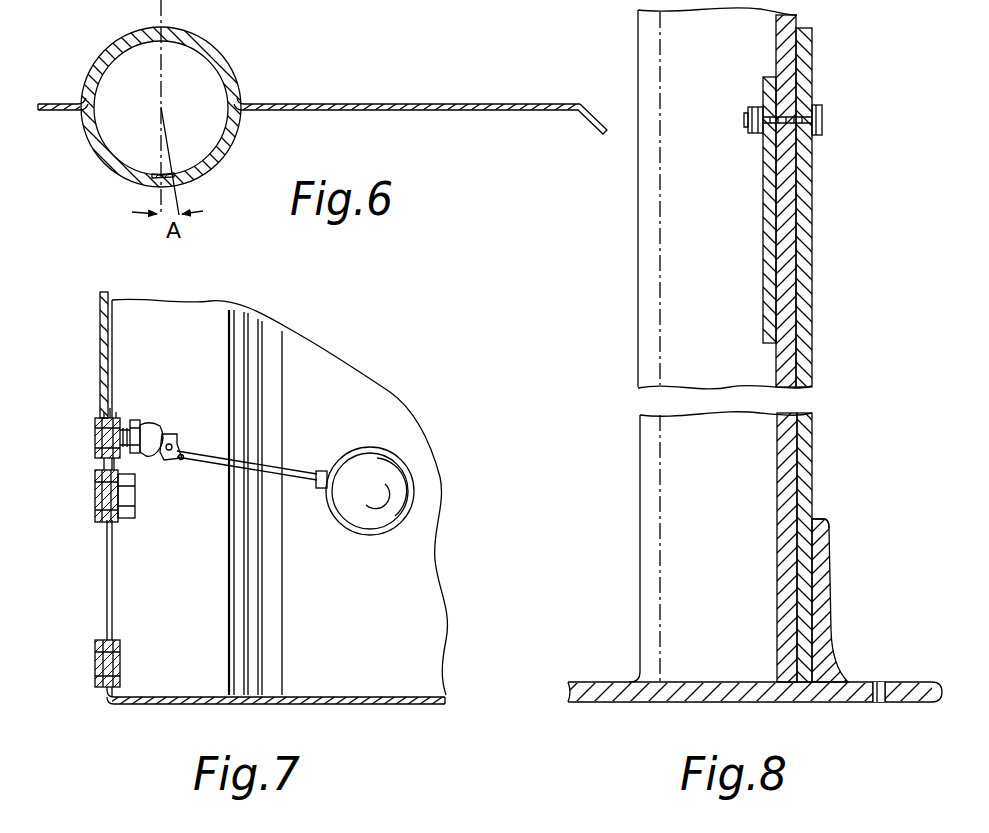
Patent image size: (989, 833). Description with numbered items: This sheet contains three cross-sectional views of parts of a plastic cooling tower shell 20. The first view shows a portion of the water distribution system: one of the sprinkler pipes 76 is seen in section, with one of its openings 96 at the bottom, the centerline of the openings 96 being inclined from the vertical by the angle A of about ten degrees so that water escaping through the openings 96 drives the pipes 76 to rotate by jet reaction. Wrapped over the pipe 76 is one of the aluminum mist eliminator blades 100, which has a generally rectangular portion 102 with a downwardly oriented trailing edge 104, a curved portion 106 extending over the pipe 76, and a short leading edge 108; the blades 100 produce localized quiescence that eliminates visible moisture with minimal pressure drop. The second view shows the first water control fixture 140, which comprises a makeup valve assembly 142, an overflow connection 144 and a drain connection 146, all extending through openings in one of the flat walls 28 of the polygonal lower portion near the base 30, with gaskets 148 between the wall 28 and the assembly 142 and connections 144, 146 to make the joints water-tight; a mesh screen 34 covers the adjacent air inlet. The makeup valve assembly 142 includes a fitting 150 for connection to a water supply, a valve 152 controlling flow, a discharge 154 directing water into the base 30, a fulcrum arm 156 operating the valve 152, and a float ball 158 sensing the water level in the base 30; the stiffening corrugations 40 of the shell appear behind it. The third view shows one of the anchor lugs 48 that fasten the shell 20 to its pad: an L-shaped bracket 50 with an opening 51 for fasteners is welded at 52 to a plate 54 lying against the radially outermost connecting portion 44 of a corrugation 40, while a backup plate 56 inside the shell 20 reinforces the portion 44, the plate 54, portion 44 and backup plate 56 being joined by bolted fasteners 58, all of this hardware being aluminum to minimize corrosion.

In FIG. 8, the shell 20 is at (620, 360).
In FIG. 7, the flat walls 28 is at (107, 570).
In FIG. 7, the base 30 is at (396, 705).
In FIG. 8, the base 30 is at (594, 690).
In FIG. 7, the mesh screen 34 is at (100, 328).
In FIG. 7, the corrugations 40 is at (292, 348).
In FIG. 8, the corrugations 40 is at (746, 460).
In FIG. 8, the radially outermost connecting portion 44 is at (780, 506).
In FIG. 8, the anchor lugs 48 is at (822, 357).
In FIG. 8, the L-shaped bracket 50 is at (826, 594).
In FIG. 8, the opening 51 is at (881, 682).
In FIG. 8, the weld 52 is at (814, 518).
In FIG. 8, the plate 54 is at (806, 456).
In FIG. 8, the backup plate 56 is at (776, 218).
In FIG. 8, the bolted fasteners 58 is at (823, 119).
In FIG. 6, the sprinkler pipes 76 is at (239, 138).
In FIG. 6, the openings 96 is at (190, 182).
In FIG. 6, the blades 100 is at (338, 75).
In FIG. 6, the rectangular portion 102 is at (386, 103).
In FIG. 6, the trailing edge 104 is at (592, 106).
In FIG. 6, the curved portion 106 is at (188, 31).
In FIG. 6, the leading edge 108 is at (60, 109).
In FIG. 7, the first water control fixture 140 is at (158, 391).
In FIG. 7, the makeup valve assembly 142 is at (158, 418).
In FIG. 7, the overflow connection 144 is at (130, 518).
In FIG. 7, the drain connection 146 is at (115, 645).
In FIG. 7, the gaskets 148 is at (110, 418).
In FIG. 7, the fitting 150 is at (95, 430).
In FIG. 7, the valve 152 is at (160, 428).
In FIG. 7, the discharge 154 is at (150, 462).
In FIG. 7, the fulcrum arm 156 is at (177, 447).
In FIG. 7, the float ball 158 is at (374, 522).